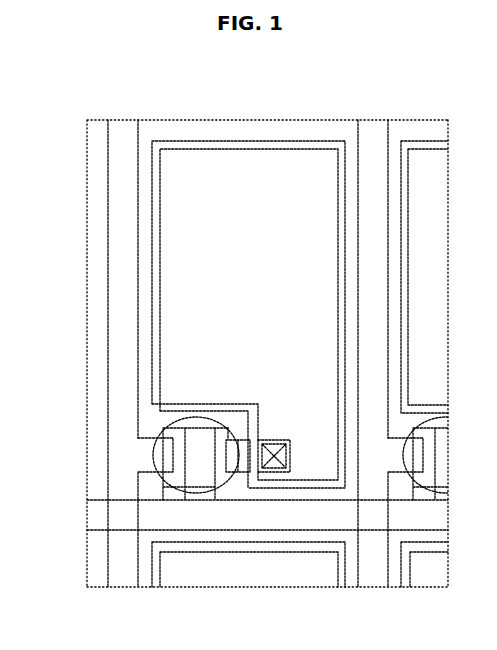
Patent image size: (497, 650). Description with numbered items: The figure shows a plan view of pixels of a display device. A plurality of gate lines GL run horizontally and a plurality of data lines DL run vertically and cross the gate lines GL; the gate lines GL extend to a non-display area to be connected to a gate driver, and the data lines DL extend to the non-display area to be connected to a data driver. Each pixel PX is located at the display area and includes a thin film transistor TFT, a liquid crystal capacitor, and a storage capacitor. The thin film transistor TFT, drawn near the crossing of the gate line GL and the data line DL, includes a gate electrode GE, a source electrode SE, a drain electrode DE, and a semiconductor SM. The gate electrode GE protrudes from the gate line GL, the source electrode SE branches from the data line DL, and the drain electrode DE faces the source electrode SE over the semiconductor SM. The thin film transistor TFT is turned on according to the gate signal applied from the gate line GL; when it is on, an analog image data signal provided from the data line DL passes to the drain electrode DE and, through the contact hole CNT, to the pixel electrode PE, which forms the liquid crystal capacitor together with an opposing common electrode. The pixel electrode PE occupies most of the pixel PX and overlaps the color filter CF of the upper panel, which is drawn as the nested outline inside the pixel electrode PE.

The pixel electrode PE is at (212, 140).
The color filter CF is at (292, 149).
The pixel PX is at (262, 223).
The data line DL is at (137, 312).
The semiconductor SM is at (178, 433).
The source electrode SE is at (155, 473).
The gate line GL is at (142, 547).
The gate electrode GE is at (247, 450).
The drain electrode DE is at (268, 437).
The contact hole CNT is at (274, 440).
The thin film transistor TFT is at (227, 500).